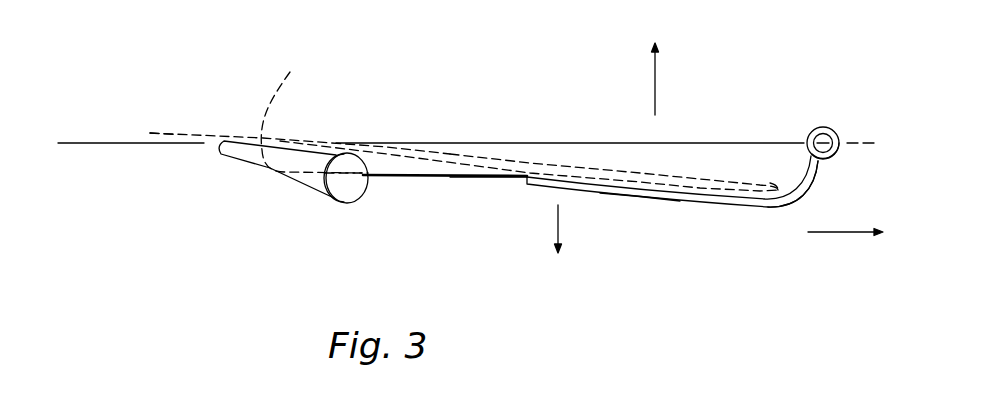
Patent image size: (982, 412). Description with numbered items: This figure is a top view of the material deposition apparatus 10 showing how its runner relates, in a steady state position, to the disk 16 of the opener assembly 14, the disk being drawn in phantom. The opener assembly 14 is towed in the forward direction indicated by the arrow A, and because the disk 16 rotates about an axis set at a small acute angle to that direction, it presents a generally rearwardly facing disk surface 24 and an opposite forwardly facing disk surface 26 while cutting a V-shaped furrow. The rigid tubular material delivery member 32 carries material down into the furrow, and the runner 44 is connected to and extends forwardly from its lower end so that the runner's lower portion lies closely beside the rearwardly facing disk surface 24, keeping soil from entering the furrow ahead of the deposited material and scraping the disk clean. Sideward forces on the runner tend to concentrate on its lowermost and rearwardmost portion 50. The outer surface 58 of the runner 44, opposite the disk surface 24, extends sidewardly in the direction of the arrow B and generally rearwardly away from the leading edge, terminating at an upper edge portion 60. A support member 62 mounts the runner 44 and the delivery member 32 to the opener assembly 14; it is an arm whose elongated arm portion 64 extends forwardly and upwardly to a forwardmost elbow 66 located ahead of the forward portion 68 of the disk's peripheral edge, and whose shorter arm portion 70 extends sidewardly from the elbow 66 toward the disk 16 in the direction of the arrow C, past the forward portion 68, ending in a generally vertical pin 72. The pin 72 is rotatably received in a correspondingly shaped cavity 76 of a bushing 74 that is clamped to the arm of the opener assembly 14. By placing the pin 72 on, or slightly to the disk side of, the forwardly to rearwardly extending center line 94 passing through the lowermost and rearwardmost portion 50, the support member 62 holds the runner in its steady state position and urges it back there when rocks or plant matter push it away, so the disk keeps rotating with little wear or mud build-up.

The material deposition apparatus 10 is at (203, 162).
The opener assembly 14 is at (193, 128).
The disk 16 is at (153, 127).
The rearwardly facing disk surface 24 is at (687, 186).
The forwardly facing disk surface 26 is at (684, 180).
The material delivery member 32 is at (280, 182).
The runner 44 is at (387, 140).
The lowermost and rearwardmost portion 50 is at (311, 107).
The outer surface 58 is at (482, 178).
The upper edge portion 60 is at (403, 178).
The support member 62 is at (729, 209).
The elongated arm portion 64 is at (635, 198).
The elbow 66 is at (802, 197).
The forward portion 68 is at (778, 187).
The shorter arm portion 70 is at (821, 160).
The pin 72 is at (834, 128).
The bushing 74 is at (814, 128).
The cavity 76 is at (836, 152).
The center line 94 is at (83, 146).
The forward direction arrow A is at (835, 236).
The sideward direction arrow B is at (558, 222).
The direction toward disk arrow C is at (655, 86).